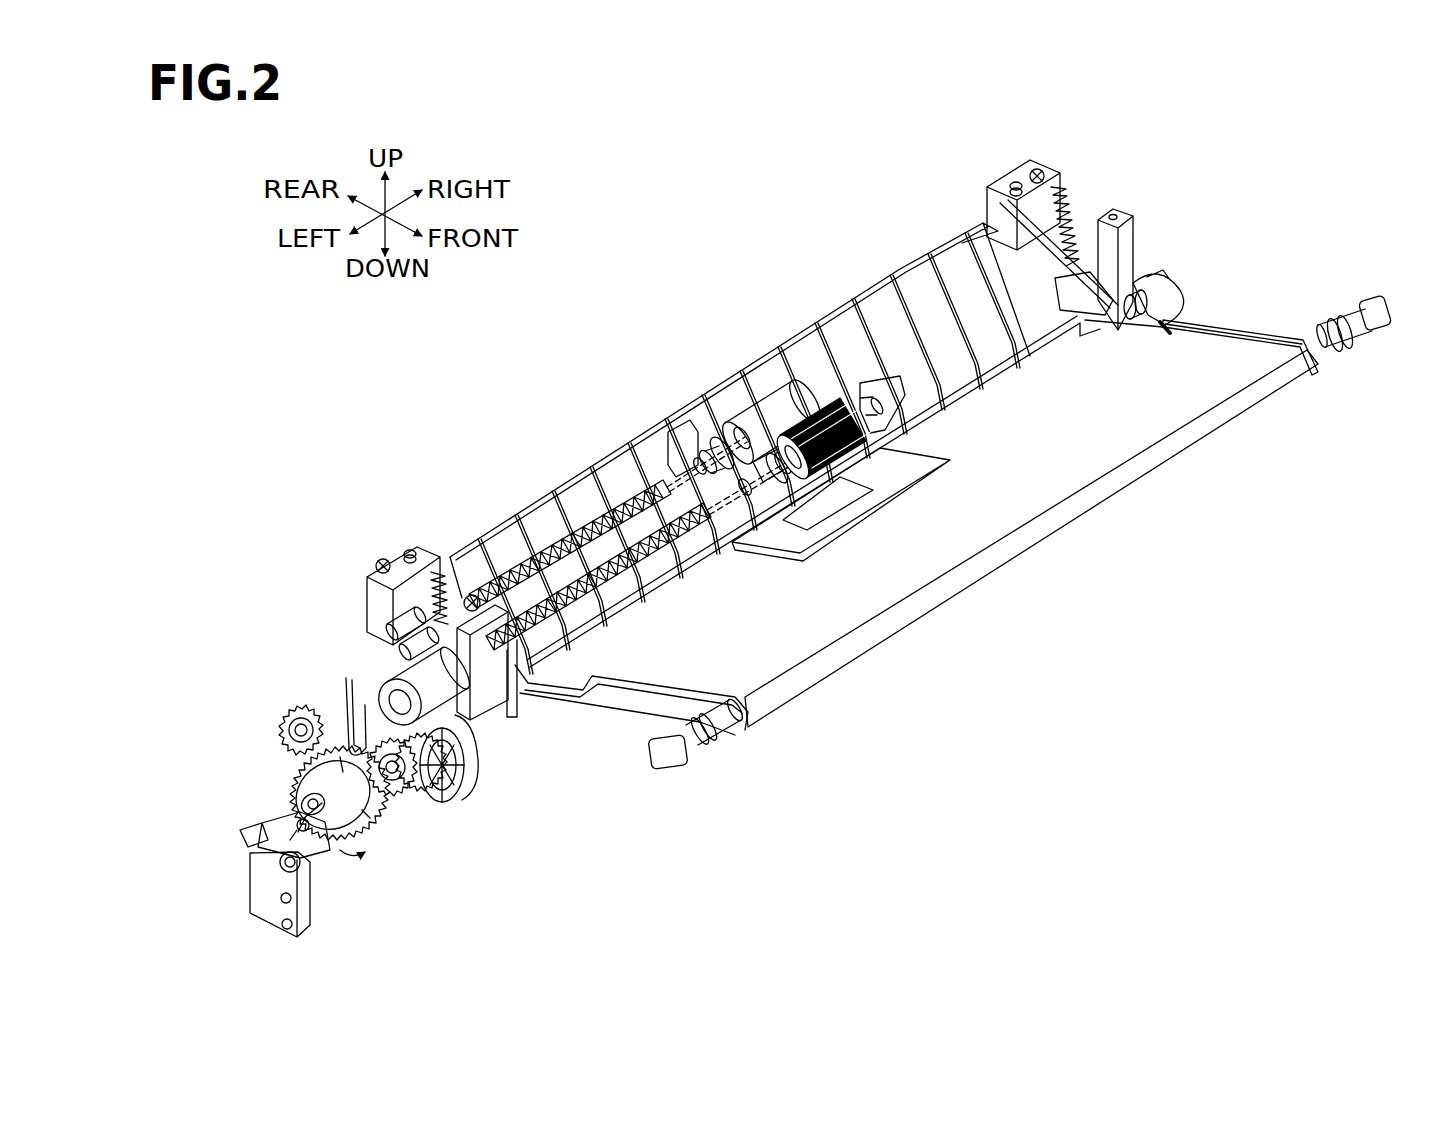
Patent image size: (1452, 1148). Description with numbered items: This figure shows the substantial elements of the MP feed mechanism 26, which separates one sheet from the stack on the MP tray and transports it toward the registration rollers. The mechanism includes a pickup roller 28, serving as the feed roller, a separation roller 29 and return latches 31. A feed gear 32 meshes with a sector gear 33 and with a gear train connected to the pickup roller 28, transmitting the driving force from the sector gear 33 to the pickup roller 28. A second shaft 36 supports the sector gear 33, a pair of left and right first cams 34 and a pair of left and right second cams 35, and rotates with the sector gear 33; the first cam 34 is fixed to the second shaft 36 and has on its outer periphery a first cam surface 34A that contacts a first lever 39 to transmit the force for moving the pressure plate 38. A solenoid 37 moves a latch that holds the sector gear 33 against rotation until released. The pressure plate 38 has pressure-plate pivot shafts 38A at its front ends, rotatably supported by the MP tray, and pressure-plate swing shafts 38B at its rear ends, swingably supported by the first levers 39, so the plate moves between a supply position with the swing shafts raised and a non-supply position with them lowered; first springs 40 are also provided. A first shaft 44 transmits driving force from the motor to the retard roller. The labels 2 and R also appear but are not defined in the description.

The sheet feed unit frame 2 is at (471, 531).
The MP feed mechanism 26 is at (571, 354).
The pickup roller 28 is at (800, 402).
The separation roller 29 is at (763, 402).
The return latches 31 is at (863, 377).
The feed gear 32 is at (410, 797).
The sector gear 33 is at (372, 838).
The first cam 34 is at (454, 796).
The first cam surface 34A is at (456, 792).
The second cam 35 is at (462, 745).
The second shaft 36 is at (302, 826).
The solenoid 37 is at (257, 880).
The pressure plate 38 is at (980, 528).
The pressure-plate pivot shaft 38A is at (705, 760).
The pressure-plate swing shaft 38B is at (528, 700).
The first lever 39 is at (346, 689).
The first spring 40 is at (430, 598).
The first shaft 44 is at (386, 631).
The rotation direction R is at (352, 866).